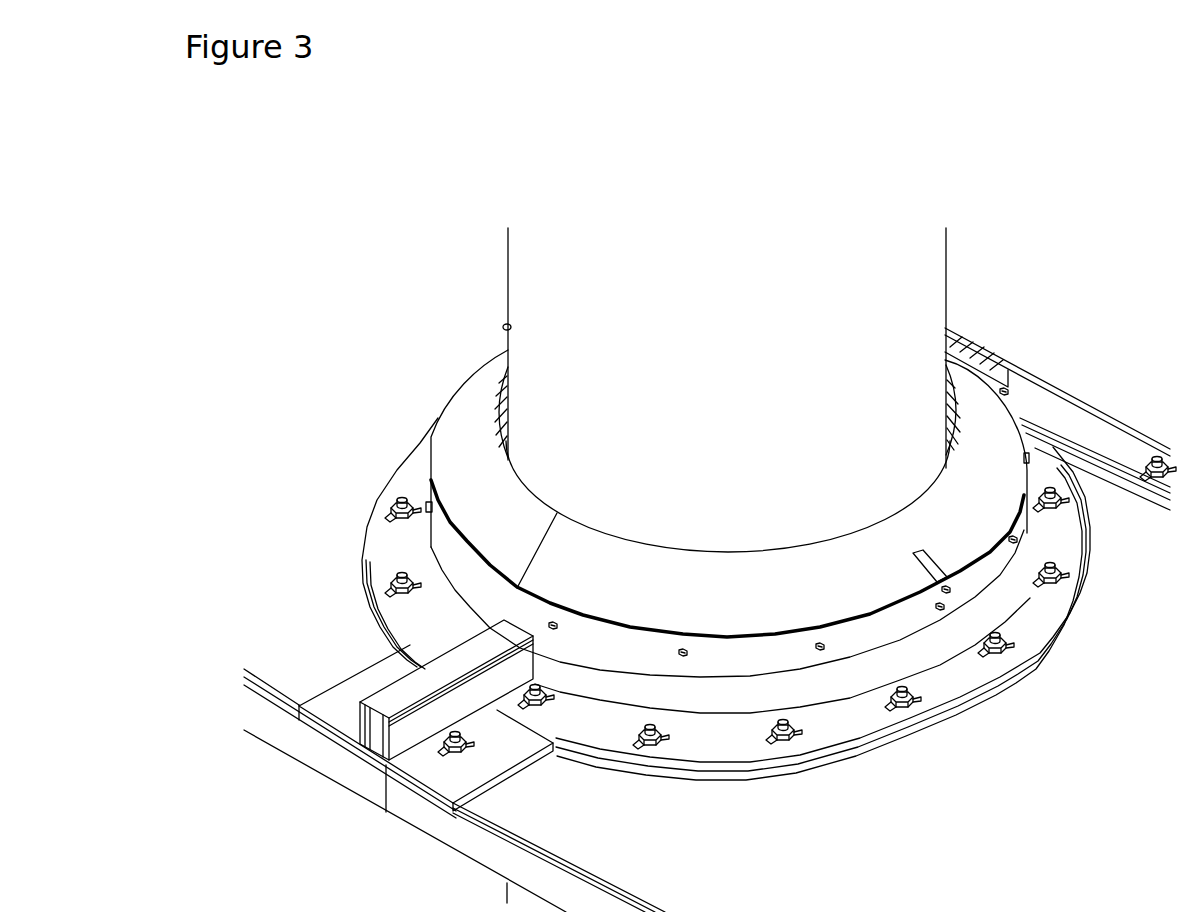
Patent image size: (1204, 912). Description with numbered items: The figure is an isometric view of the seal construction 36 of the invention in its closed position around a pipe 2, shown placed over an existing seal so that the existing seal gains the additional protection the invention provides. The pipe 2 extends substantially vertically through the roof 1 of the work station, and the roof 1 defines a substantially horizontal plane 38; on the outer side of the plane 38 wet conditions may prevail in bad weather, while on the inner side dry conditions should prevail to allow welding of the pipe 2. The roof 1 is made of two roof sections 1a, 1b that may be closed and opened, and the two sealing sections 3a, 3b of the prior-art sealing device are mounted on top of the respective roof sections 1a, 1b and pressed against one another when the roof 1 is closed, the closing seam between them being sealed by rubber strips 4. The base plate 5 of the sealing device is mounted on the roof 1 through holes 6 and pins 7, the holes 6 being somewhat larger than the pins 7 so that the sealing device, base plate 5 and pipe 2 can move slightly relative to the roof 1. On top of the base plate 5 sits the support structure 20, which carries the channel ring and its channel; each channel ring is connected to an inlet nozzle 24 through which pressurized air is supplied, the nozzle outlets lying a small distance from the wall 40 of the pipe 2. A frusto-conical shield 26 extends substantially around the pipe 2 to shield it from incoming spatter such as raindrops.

The roof 1 is at (688, 554).
The roof section 1a is at (325, 320).
The roof section 1b is at (1127, 813).
The pipe 2 is at (907, 263).
The sealing section 3a is at (400, 380).
The sealing section 3b is at (884, 803).
The rubber strips 4 is at (385, 707).
The base plate 5 is at (458, 787).
The holes 6 is at (770, 743).
The pins 7 is at (1062, 582).
The support structure 20 is at (390, 560).
The inlet nozzle 24 is at (507, 327).
The shield 26 is at (468, 398).
The seal construction 36 is at (1057, 373).
The plane 38 is at (392, 173).
The wall 40 is at (614, 295).